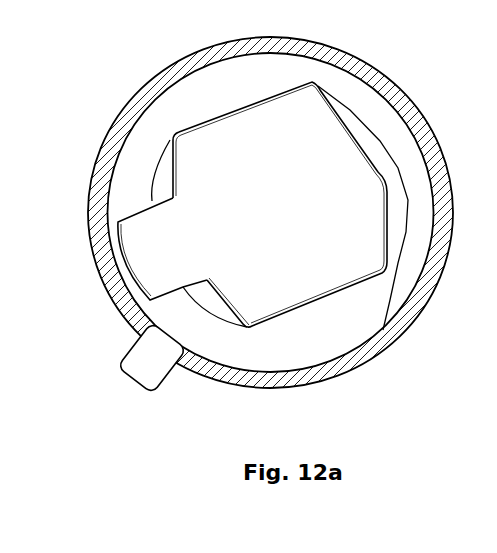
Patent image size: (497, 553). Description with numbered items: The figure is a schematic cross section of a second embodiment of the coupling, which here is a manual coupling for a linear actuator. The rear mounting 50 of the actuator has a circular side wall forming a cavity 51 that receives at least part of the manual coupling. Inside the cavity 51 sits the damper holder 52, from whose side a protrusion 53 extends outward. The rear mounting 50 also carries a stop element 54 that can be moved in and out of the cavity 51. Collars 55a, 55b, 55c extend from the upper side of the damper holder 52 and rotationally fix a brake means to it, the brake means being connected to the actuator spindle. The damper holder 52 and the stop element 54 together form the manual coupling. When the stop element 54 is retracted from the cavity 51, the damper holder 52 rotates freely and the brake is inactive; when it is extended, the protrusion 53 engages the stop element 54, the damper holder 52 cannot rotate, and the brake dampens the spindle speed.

The rear mounting 50 is at (198, 63).
The cavity 51 is at (325, 330).
The damper holder 52 is at (263, 207).
The protrusion 53 is at (138, 273).
The stop element 54 is at (138, 367).
The collar 55a is at (357, 120).
The collar 55b is at (217, 307).
The collar 55c is at (162, 180).